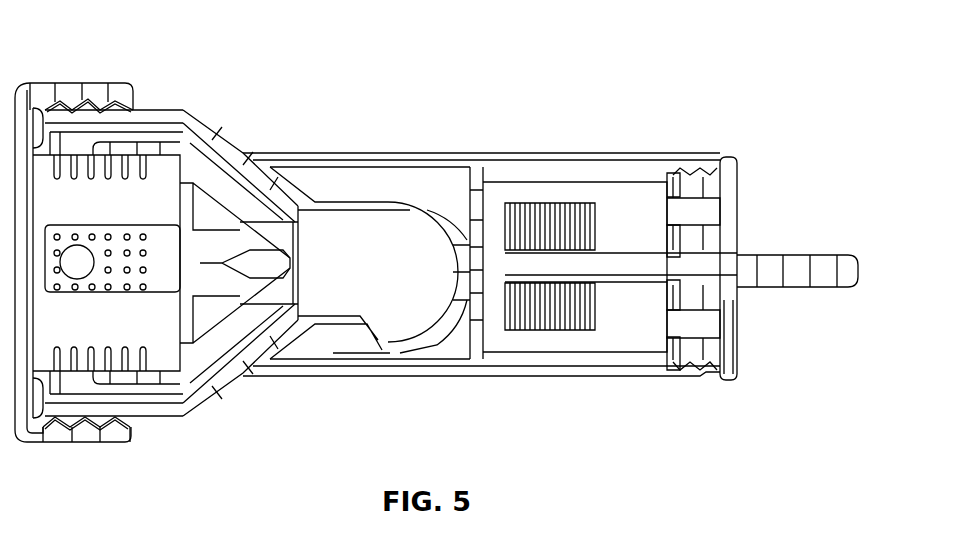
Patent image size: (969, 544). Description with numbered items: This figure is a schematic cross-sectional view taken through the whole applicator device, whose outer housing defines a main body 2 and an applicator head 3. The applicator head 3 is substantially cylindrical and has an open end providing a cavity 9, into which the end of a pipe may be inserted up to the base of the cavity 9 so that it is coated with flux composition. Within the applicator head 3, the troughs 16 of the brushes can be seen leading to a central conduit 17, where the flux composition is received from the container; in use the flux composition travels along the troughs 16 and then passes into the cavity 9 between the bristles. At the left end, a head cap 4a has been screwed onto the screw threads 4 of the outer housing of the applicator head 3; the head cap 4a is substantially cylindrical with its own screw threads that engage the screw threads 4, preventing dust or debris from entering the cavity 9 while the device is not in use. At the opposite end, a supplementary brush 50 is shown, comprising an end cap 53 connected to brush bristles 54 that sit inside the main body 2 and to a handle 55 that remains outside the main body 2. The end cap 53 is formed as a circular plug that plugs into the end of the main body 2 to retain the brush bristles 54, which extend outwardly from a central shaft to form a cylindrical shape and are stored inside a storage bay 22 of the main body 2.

The main body 2 is at (480, 157).
The applicator head 3 is at (223, 137).
The screw threads 4 is at (97, 107).
The head cap 4a is at (43, 83).
The cavity 9 is at (97, 215).
The trough 16 is at (162, 143).
The central conduit 17 is at (390, 270).
The storage bay 22 is at (638, 207).
The supplementary brush 50 is at (733, 158).
The end cap 53 is at (730, 330).
The brush bristles 54 is at (540, 203).
The handle 55 is at (823, 273).